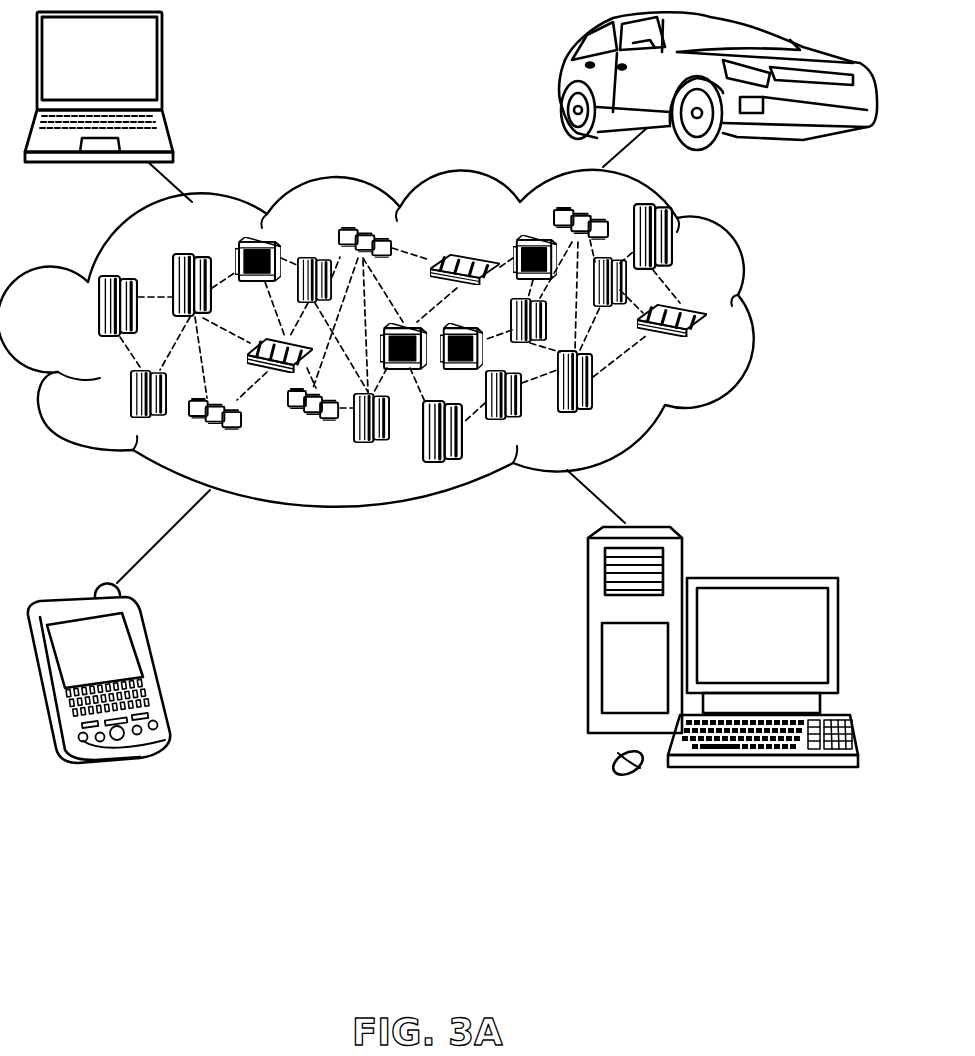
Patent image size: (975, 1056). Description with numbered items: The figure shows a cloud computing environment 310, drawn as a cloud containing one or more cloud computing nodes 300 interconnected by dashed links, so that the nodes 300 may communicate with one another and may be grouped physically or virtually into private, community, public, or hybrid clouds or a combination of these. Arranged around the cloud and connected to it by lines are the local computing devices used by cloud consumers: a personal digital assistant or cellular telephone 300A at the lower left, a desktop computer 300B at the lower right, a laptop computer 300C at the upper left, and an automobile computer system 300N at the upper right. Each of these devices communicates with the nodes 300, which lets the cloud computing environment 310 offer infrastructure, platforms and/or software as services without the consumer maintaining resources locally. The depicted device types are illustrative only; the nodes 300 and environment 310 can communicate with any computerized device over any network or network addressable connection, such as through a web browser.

The cloud computing nodes 300 is at (722, 347).
The cloud computing environment 310 is at (762, 313).
The personal digital assistant (PDA) or cellular telephone 300A is at (153, 663).
The desktop computer 300B is at (760, 578).
The laptop computer 300C is at (162, 66).
The automobile computer system 300N is at (560, 80).